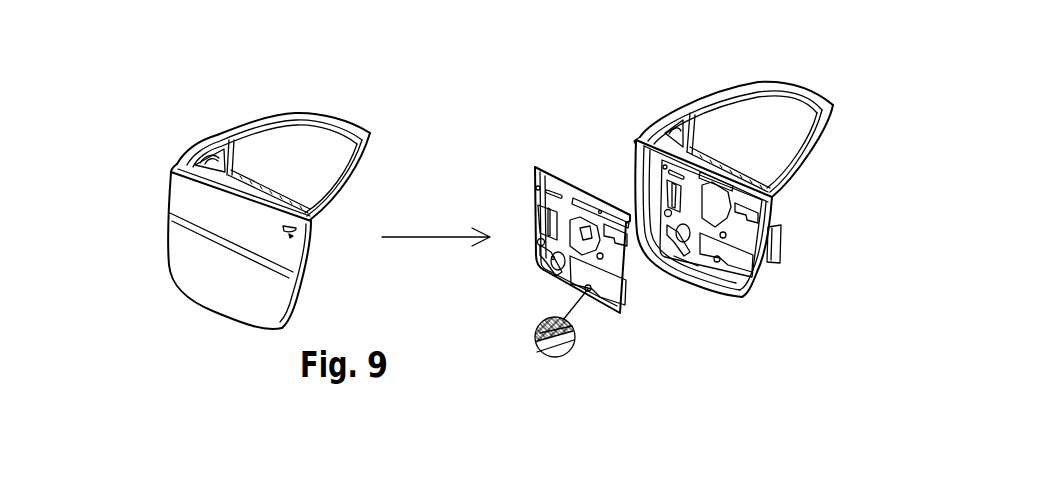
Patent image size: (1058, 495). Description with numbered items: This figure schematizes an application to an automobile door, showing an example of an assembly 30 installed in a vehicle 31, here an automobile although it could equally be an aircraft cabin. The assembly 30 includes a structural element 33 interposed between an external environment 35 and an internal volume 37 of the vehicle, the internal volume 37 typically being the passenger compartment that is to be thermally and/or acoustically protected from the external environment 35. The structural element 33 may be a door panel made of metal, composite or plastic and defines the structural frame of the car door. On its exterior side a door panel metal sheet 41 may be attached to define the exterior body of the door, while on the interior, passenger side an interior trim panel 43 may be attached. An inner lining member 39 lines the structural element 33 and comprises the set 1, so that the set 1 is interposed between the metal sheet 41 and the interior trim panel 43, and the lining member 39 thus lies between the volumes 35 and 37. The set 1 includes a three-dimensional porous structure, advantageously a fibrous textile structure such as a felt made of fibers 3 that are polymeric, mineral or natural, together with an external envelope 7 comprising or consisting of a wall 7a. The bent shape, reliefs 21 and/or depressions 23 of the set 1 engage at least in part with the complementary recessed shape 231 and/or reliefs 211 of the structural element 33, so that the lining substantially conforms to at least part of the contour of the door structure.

The set 1 is at (536, 322).
The inner lining member 39 is at (529, 191).
The fibers 3 is at (577, 333).
The external envelope 7 is at (549, 362).
The wall 7a is at (555, 333).
The reliefs 21 is at (540, 250).
The depressions 23 is at (541, 213).
The assembly 30 is at (572, 142).
The vehicle 31 is at (810, 84).
The structural element 33 is at (644, 133).
The external environment 35 is at (253, 222).
The internal volume 37 is at (741, 205).
The door panel metal sheet 41 is at (317, 229).
The interior trim panel 43 is at (787, 254).
The reliefs 211 is at (714, 262).
The recessed shape 231 is at (672, 262).